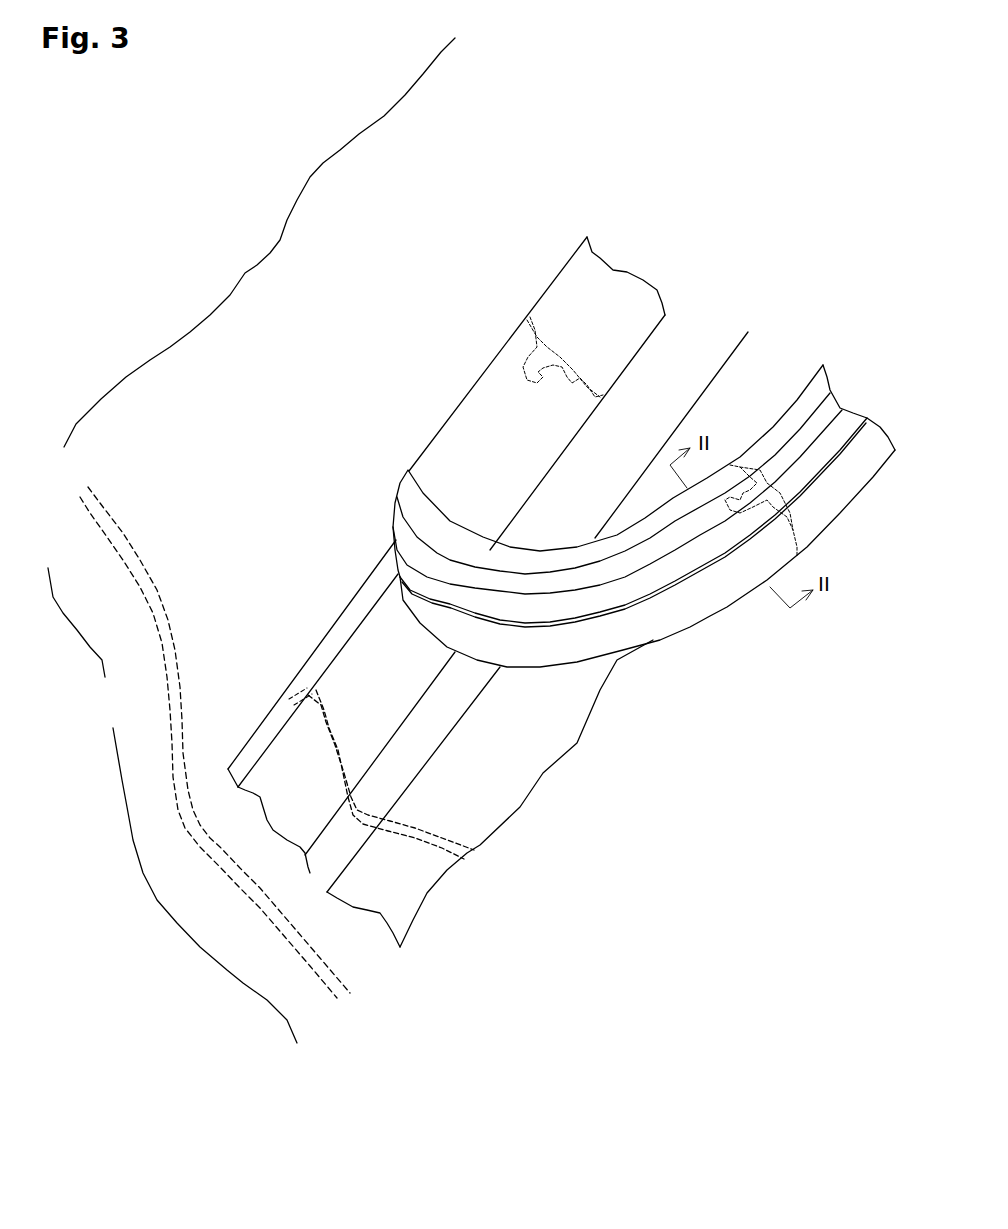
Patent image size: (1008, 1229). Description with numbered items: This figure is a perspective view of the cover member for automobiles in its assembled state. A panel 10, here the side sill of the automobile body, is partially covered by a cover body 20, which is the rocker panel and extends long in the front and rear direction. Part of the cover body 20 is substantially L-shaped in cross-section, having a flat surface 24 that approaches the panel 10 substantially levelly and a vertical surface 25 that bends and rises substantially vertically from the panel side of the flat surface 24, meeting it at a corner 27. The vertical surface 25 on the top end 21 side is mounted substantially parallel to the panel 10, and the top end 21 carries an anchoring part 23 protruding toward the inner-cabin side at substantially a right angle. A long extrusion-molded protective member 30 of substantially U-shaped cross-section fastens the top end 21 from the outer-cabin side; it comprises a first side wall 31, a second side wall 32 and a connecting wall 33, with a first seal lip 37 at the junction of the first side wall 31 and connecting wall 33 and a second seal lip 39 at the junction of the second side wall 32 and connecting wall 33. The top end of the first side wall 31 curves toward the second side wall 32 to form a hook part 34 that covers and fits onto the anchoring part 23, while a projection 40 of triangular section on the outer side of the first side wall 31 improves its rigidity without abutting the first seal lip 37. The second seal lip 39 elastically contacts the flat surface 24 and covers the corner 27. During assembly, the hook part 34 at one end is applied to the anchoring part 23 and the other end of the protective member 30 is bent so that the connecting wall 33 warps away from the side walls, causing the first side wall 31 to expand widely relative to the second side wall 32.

The panel 10 is at (251, 553).
The cover body 20 is at (537, 627).
The top end 21 is at (334, 654).
The anchoring part 23 is at (308, 673).
The flat surface 24 is at (497, 800).
The vertical surface 25 is at (373, 643).
The corner 27 is at (427, 718).
The protective member 30 is at (644, 548).
The first side wall 31 is at (538, 583).
The second side wall 32 is at (681, 588).
The connecting wall 33 is at (575, 343).
The hook part 34 is at (653, 563).
The first seal lip 37 is at (650, 520).
The second seal lip 39 is at (742, 603).
The projection 40 is at (522, 572).